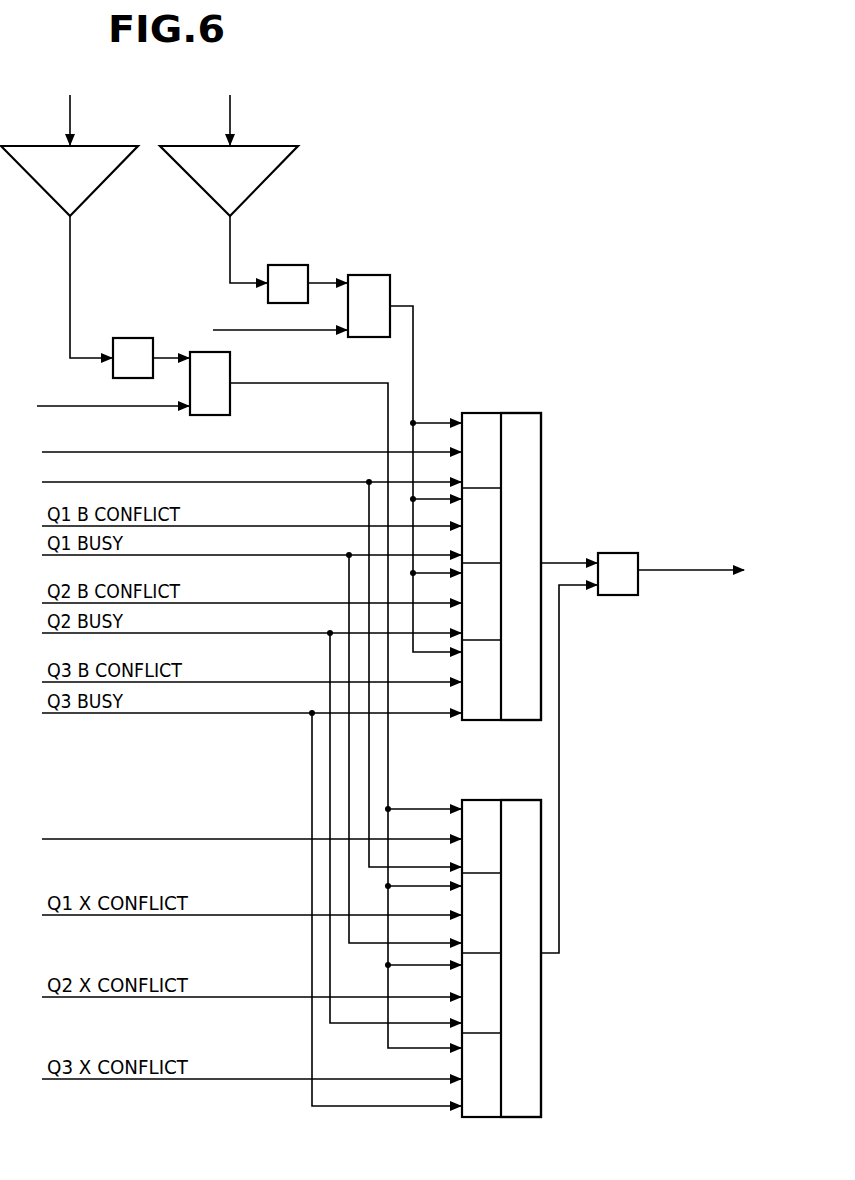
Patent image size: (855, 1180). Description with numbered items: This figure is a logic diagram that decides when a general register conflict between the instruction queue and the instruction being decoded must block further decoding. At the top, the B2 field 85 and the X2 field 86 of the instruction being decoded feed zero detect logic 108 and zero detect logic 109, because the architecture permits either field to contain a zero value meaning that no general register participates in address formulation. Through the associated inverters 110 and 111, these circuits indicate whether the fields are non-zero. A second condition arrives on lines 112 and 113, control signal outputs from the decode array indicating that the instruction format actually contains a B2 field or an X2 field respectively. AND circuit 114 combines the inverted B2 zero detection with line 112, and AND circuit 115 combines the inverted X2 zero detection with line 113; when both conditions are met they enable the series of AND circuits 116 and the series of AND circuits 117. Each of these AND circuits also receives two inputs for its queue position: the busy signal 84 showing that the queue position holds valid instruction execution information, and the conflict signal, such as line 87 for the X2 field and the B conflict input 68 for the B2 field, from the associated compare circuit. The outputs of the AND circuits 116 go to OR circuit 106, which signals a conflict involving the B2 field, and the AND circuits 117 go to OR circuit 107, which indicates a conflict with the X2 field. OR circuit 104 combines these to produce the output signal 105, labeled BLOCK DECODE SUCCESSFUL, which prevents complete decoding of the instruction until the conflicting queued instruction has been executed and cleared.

The X2 field 86 is at (75, 114).
The B2 field 85 is at (238, 114).
The zero detect logic 109 is at (105, 183).
The zero detect logic 108 is at (265, 183).
The inverter 110 is at (295, 263).
The inverter 111 is at (127, 338).
The AND circuit 114 is at (389, 276).
The AND circuit 115 is at (231, 371).
The line 112 is at (310, 333).
The line 113 is at (52, 404).
The series of AND circuits 116 is at (488, 412).
The series of AND circuits 117 is at (485, 799).
The OR circuit 106 is at (543, 475).
The OR circuit 107 is at (544, 1021).
The OR circuit 104 is at (615, 552).
The output signal 105 is at (724, 567).
The Q0 B conflict line 68 is at (222, 452).
The signal from busy trigger 84 is at (170, 482).
The line 87 is at (60, 841).